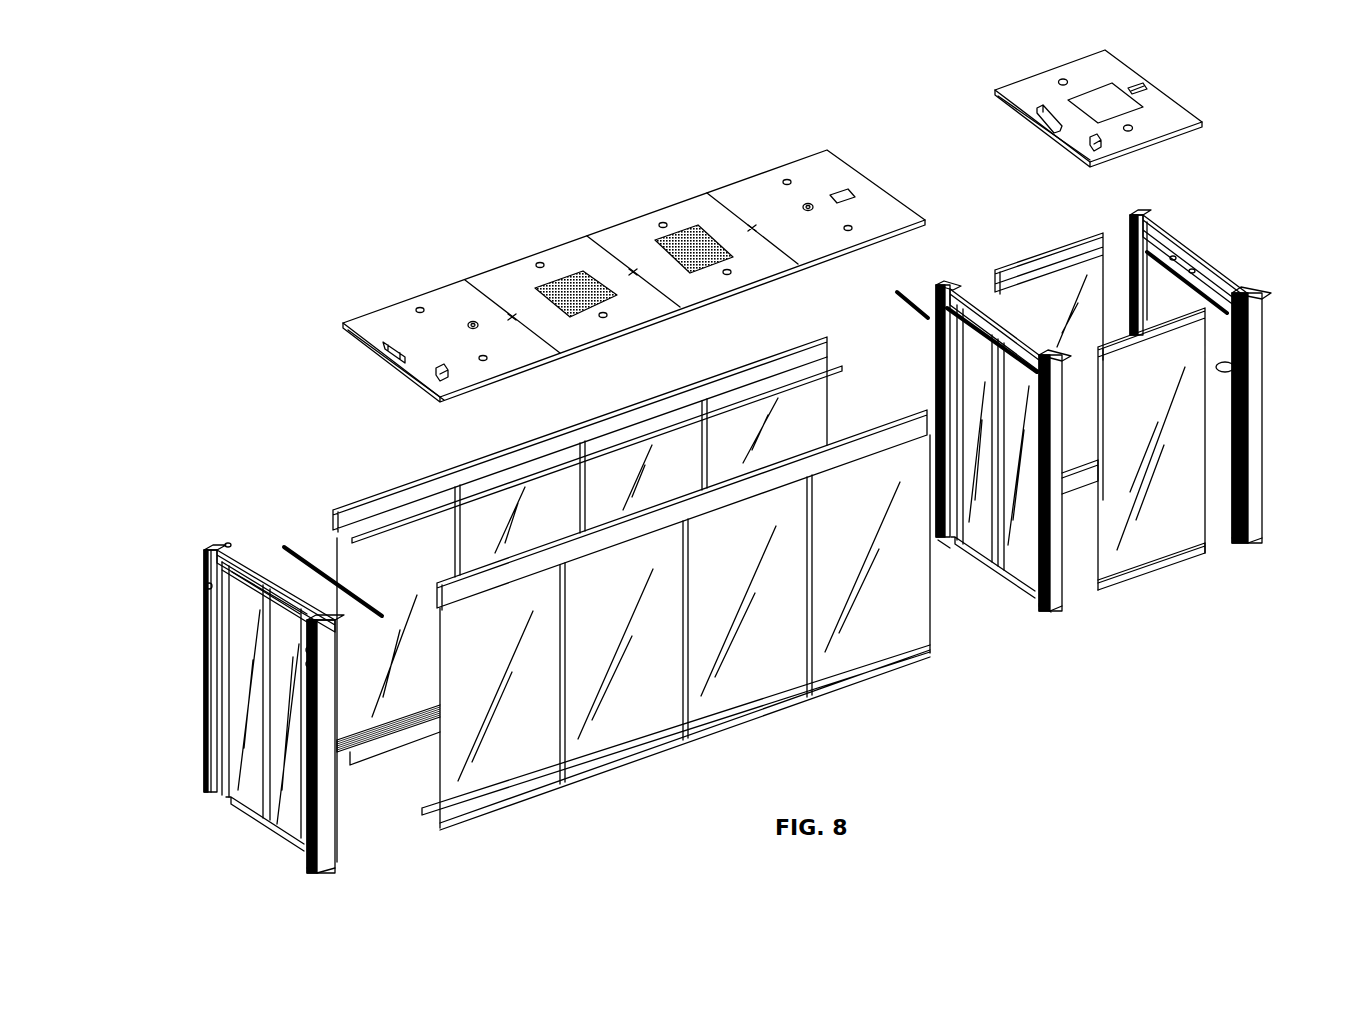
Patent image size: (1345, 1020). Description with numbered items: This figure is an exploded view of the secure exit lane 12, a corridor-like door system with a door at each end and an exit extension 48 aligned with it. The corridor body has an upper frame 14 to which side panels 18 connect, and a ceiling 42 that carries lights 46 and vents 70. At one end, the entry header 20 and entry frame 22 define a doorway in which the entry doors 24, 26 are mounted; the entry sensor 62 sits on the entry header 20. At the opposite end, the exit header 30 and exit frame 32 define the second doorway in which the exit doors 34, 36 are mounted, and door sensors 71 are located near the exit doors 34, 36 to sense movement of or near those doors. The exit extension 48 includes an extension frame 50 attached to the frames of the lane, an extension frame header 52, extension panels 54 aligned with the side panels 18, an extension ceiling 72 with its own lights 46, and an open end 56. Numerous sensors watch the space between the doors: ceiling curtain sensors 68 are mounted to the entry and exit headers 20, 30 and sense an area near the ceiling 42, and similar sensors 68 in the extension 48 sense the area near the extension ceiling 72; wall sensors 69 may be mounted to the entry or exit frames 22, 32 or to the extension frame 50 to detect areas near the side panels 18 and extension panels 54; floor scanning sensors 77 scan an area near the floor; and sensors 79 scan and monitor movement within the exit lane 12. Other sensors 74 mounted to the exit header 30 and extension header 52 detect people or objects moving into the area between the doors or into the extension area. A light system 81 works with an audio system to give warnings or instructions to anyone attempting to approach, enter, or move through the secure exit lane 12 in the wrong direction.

The secure exit lane 12 is at (618, 171).
The upper frame 14 is at (858, 450).
The side panels 18 is at (352, 567).
The entry header 20 is at (269, 684).
The entry frame 22 is at (333, 843).
The entry door 24 is at (240, 631).
The entry door 26 is at (289, 812).
The exit header 30 is at (1049, 433).
The exit frame 32 is at (1062, 566).
The exit door 34 is at (934, 383).
The exit door 36 is at (1031, 590).
The ceiling 42 is at (703, 206).
The lights 46 is at (485, 362).
The exit extension 48 is at (1231, 334).
The extension frame 50 is at (1258, 441).
The extension frame header 52 is at (1243, 268).
The extension panels 54 is at (1027, 320).
The open end 56 is at (1280, 337).
The entry sensor 62 is at (262, 587).
The ceiling curtain sensors 68 is at (284, 545).
The wall sensors 69 is at (228, 543).
The vents 70 is at (566, 275).
The door sensors 71 is at (940, 546).
The extension ceiling 72 is at (1168, 111).
The sensors 74 is at (980, 332).
The floor scanning sensors 77 is at (357, 766).
The sensors 79 is at (424, 590).
The light system 81 is at (204, 587).